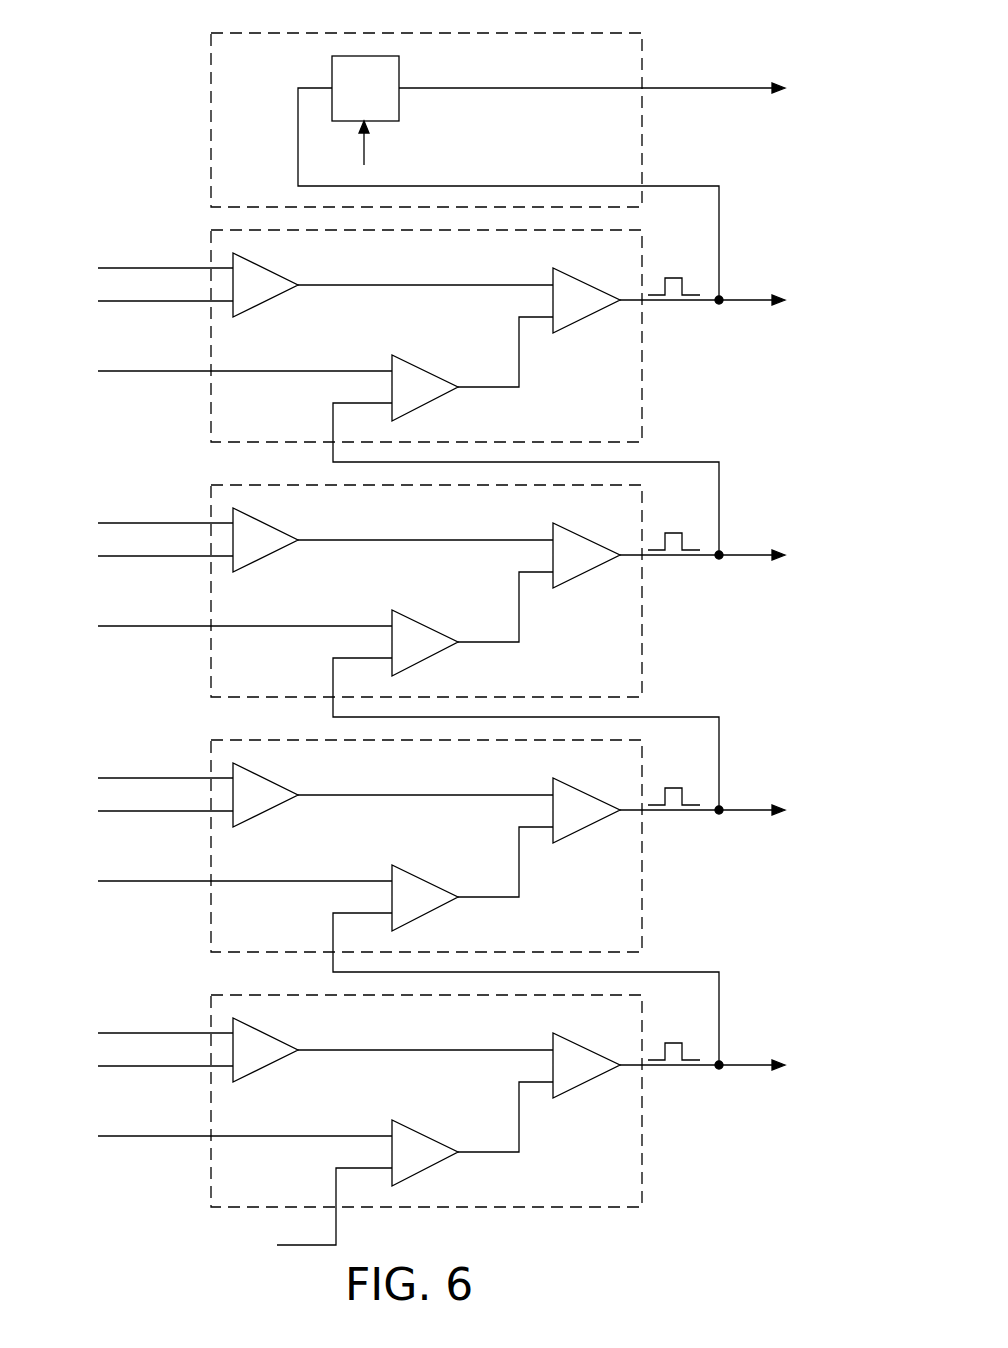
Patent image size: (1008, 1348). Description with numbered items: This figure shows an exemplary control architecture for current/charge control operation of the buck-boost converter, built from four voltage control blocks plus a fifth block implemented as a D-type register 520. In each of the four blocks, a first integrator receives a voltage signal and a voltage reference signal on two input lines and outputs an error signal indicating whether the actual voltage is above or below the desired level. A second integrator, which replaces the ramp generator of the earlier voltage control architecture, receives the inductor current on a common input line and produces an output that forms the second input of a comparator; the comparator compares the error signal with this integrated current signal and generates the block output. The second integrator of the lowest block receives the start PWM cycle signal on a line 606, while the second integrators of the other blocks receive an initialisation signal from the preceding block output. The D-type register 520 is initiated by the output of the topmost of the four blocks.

The D-type register 520 is at (364, 56).
The line 606 is at (256, 1211).